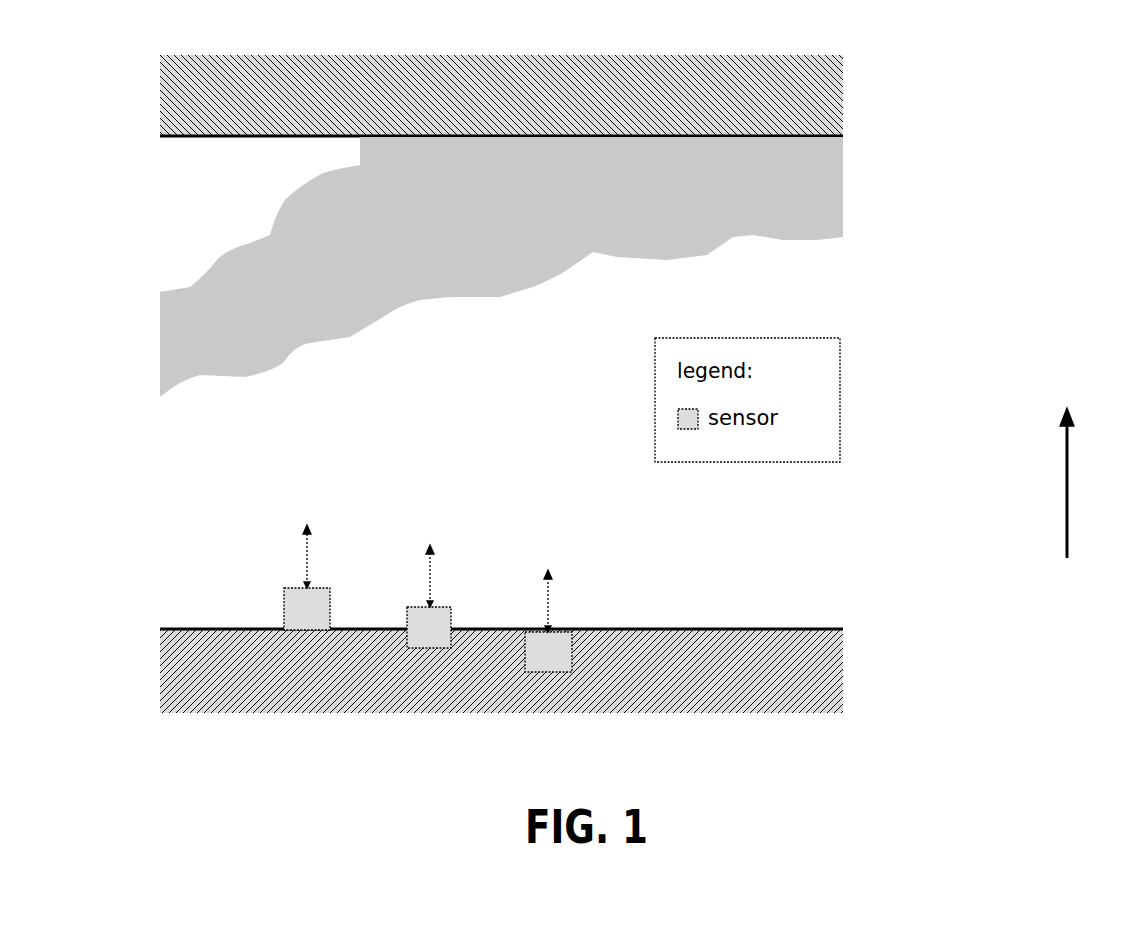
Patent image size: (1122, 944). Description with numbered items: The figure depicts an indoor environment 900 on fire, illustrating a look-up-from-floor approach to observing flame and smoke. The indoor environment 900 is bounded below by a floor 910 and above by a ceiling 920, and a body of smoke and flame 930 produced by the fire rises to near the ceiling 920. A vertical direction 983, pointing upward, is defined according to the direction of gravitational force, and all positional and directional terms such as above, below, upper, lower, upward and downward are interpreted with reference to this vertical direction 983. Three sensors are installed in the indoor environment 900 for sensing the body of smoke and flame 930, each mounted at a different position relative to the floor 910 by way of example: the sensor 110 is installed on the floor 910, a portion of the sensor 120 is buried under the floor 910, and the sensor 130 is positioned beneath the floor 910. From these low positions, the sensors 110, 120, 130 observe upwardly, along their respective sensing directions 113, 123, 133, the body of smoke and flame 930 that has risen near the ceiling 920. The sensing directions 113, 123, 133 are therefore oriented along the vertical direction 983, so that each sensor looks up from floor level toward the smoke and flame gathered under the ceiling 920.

The indoor environment 900 is at (552, 384).
The floor 910 is at (194, 629).
The ceiling 920 is at (191, 150).
The body of smoke and flame 930 is at (190, 325).
The vertical direction 983 is at (1065, 497).
The sensor 110 is at (293, 608).
The sensing direction 113 is at (307, 560).
The sensor 120 is at (417, 618).
The sensing direction 123 is at (430, 572).
The sensor 130 is at (537, 646).
The sensing direction 133 is at (548, 597).